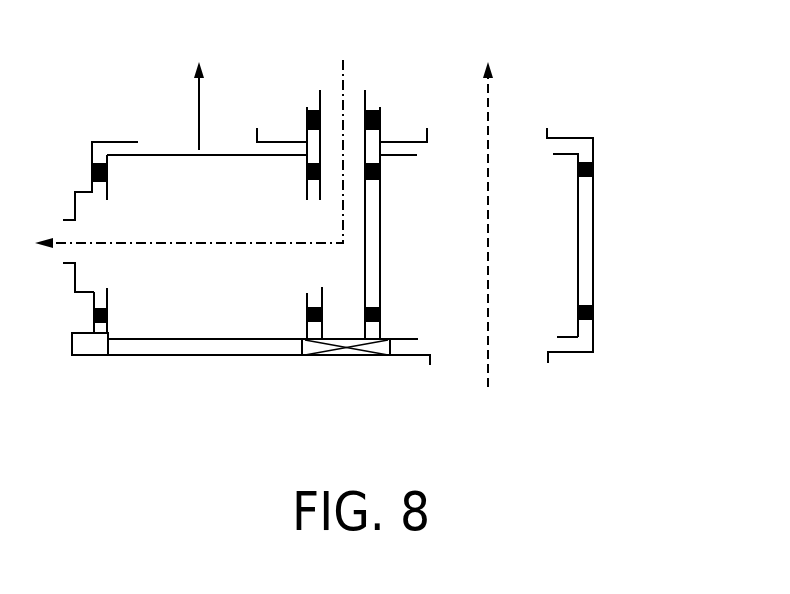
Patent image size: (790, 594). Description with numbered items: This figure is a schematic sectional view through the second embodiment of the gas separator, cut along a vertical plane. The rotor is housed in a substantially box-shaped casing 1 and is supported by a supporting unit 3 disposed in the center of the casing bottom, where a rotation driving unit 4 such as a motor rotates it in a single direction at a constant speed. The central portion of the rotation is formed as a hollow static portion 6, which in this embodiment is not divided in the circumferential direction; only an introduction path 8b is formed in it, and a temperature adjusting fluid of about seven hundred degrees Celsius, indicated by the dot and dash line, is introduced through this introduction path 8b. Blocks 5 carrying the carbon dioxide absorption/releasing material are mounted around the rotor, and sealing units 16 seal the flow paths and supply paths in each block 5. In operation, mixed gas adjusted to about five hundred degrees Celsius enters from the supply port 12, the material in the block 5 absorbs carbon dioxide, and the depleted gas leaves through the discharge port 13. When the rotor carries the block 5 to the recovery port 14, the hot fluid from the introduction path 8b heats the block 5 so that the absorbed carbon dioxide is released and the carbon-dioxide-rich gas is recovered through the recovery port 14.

The casing 1 is at (585, 138).
The supporting unit 3 is at (345, 355).
The rotation driving unit 4 is at (88, 350).
The block 5 is at (253, 197).
The static portion 6 is at (367, 93).
The introduction path 8b is at (340, 318).
The supply port 12 is at (548, 355).
The discharge port 13 is at (546, 130).
The recovery port 14 is at (104, 143).
The sealing unit 16 is at (97, 317).